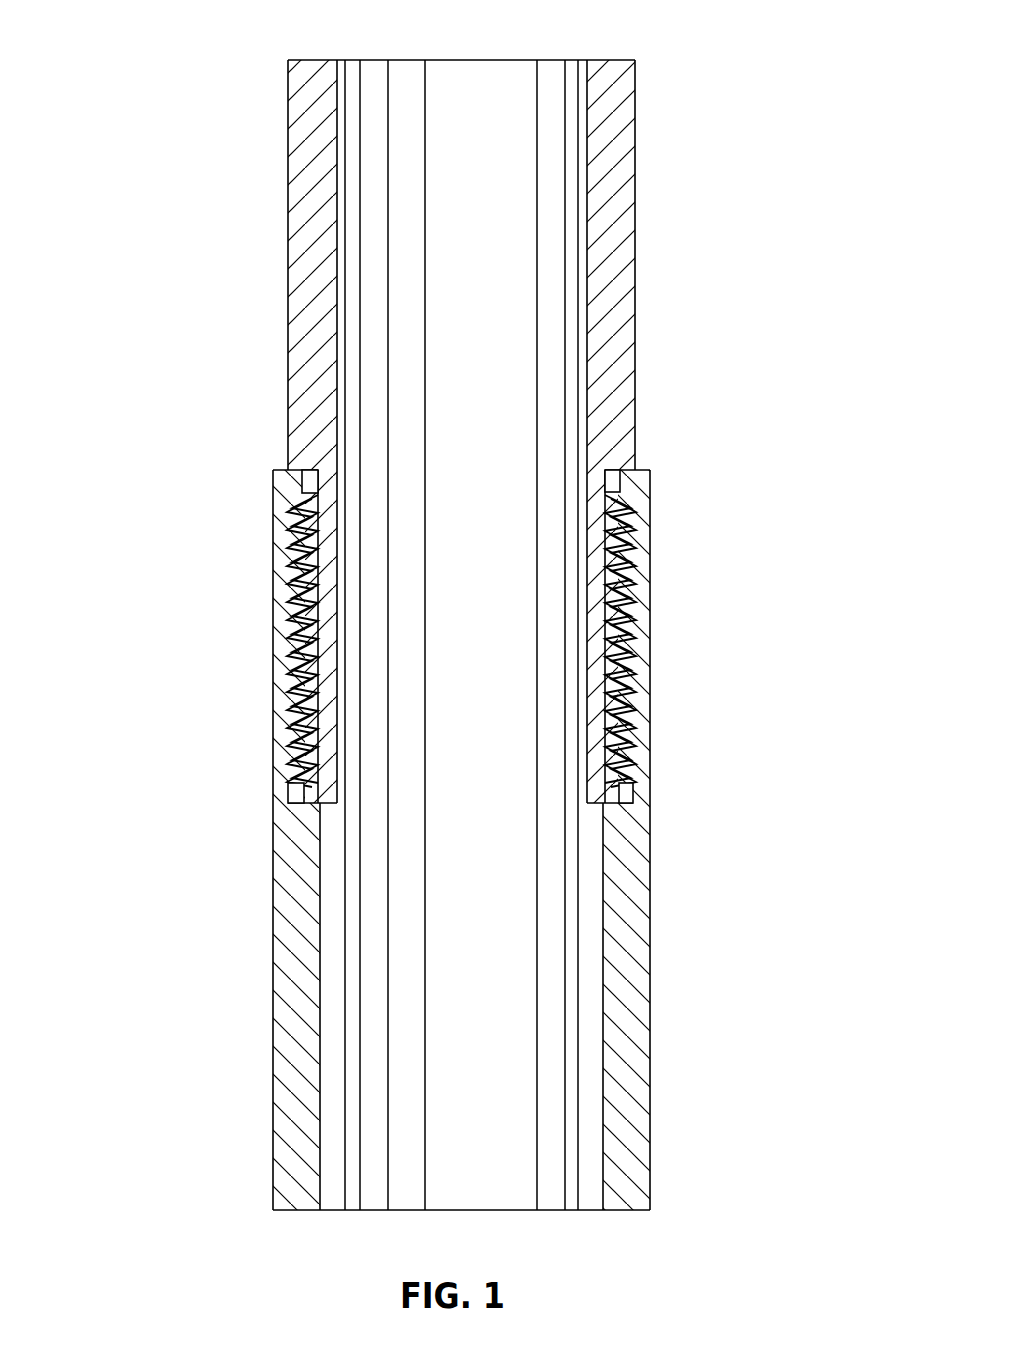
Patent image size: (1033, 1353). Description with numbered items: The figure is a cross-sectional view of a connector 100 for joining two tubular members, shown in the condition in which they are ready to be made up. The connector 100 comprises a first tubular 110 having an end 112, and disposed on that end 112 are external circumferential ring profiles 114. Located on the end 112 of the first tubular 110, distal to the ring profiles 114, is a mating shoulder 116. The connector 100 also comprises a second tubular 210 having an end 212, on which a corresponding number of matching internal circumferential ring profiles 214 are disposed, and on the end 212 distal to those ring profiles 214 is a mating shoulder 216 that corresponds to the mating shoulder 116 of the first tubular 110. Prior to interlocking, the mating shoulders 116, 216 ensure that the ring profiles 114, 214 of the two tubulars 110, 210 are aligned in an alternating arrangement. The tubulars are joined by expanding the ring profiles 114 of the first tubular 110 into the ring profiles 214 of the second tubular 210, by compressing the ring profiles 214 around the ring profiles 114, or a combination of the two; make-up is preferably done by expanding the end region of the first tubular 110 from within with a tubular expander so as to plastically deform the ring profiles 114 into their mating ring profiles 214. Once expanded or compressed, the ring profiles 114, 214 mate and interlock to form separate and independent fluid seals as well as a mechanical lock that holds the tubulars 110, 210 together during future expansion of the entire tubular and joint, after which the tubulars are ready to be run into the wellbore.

The connector 100 is at (70, 32).
The first tubular 110 is at (288, 243).
The end 112 is at (305, 805).
The external circumferential ring profiles 114 is at (300, 590).
The mating shoulder 116 is at (312, 478).
The second tubular 210 is at (650, 927).
The end 212 is at (642, 468).
The internal circumferential ring profiles 214 is at (615, 578).
The mating shoulder 216 is at (628, 797).